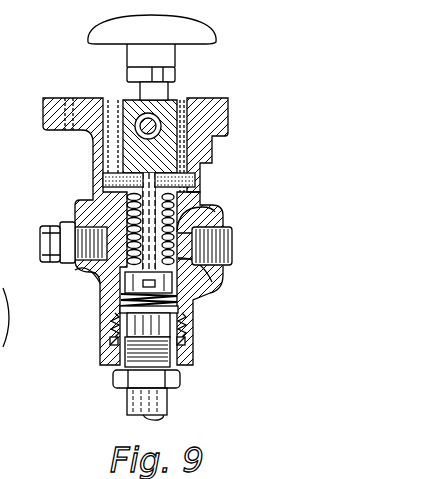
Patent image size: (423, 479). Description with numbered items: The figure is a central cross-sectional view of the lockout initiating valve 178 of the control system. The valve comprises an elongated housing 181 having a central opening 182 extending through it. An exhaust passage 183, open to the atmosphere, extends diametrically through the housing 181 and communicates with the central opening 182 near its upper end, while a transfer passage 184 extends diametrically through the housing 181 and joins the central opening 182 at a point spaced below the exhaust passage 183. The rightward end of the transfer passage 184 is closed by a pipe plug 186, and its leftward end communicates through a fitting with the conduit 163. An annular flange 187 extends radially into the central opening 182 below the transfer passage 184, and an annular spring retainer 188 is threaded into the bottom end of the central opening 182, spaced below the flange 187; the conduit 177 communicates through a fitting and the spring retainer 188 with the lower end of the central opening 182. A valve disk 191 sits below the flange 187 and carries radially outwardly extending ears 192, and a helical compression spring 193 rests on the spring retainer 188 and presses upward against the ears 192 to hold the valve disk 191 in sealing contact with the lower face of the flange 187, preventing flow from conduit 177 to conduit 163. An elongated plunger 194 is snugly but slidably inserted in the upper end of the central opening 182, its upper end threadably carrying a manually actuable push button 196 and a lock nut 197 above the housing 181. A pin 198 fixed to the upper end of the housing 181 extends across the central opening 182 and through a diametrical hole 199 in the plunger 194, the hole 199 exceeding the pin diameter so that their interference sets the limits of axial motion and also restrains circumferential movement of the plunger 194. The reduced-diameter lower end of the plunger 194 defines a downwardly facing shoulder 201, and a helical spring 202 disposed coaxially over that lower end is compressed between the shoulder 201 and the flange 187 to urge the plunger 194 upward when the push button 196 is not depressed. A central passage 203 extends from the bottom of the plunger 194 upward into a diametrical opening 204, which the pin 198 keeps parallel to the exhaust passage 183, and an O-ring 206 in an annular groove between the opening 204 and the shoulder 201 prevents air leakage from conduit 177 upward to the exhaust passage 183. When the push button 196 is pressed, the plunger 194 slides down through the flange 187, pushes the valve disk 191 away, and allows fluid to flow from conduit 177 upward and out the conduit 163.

The conduit 163 is at (50, 230).
The conduit 177 is at (163, 407).
The initiating valve 178 is at (224, 167).
The housing 181 is at (208, 292).
The central opening 182 is at (214, 157).
The exhaust passage 183 is at (196, 182).
The transfer passage 184 is at (203, 221).
The pipe plug 186 is at (220, 238).
The annular flange 187 is at (190, 315).
The annular spring retainer 188 is at (187, 360).
The valve disk 191 is at (100, 298).
The ears 192 is at (108, 312).
The helical compression spring 193 is at (190, 324).
The plunger 194 is at (162, 138).
The push button 196 is at (206, 35).
The lock nut 197 is at (175, 73).
The pin 198 is at (162, 136).
The hole 199 is at (137, 98).
The shoulder 201 is at (174, 208).
The helical spring 202 is at (175, 275).
The central passage 203 is at (100, 278).
The opening 204 is at (107, 172).
The O-ring 206 is at (128, 193).